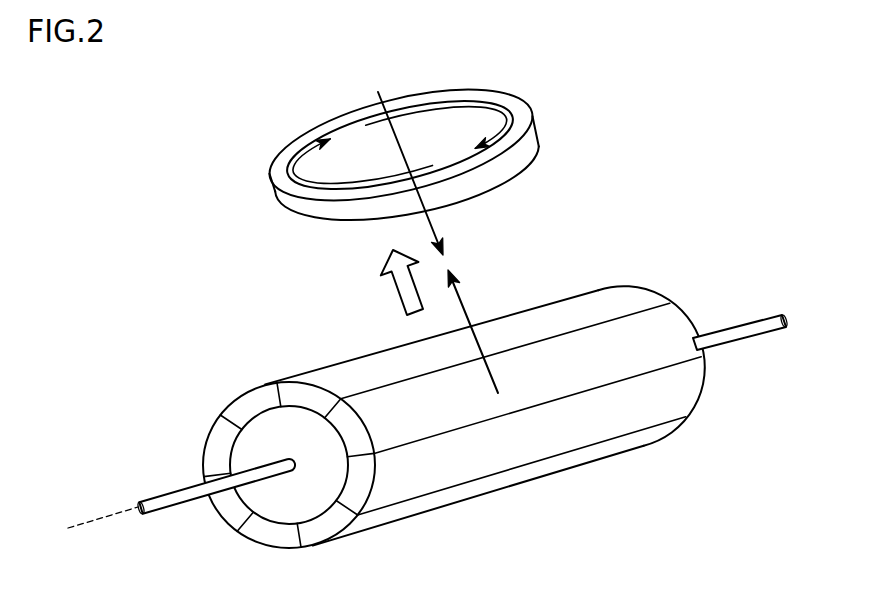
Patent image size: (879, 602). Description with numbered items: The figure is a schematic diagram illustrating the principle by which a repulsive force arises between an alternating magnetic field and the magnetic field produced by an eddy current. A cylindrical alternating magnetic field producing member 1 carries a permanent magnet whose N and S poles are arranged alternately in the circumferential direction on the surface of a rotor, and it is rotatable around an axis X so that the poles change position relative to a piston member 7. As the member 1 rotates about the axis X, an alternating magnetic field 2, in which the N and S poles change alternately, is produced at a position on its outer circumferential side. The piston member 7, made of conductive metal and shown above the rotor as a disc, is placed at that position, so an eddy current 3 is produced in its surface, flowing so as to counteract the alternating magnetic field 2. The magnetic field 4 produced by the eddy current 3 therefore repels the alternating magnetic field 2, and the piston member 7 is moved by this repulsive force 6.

The alternating magnetic field producing member 1 is at (544, 500).
The alternating magnetic field 2 is at (465, 300).
The eddy current 3 is at (470, 102).
The magnetic field 4 is at (433, 226).
The repulsive force 6 is at (397, 288).
The piston member 7 is at (522, 143).
The axis X is at (87, 523).